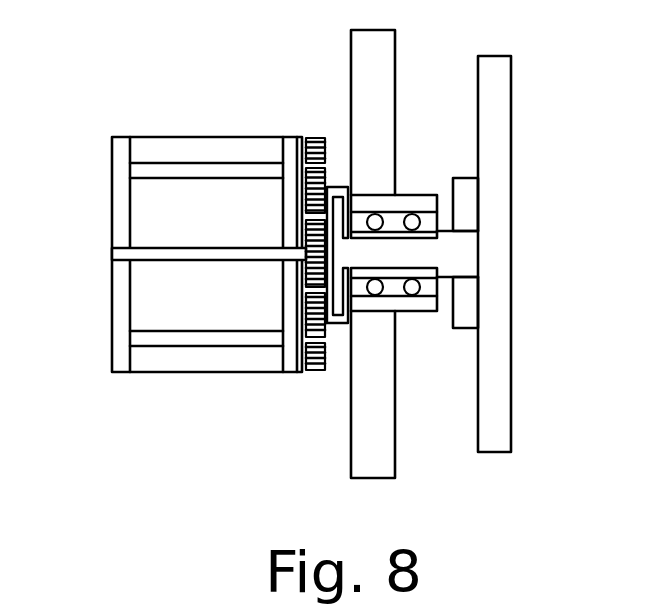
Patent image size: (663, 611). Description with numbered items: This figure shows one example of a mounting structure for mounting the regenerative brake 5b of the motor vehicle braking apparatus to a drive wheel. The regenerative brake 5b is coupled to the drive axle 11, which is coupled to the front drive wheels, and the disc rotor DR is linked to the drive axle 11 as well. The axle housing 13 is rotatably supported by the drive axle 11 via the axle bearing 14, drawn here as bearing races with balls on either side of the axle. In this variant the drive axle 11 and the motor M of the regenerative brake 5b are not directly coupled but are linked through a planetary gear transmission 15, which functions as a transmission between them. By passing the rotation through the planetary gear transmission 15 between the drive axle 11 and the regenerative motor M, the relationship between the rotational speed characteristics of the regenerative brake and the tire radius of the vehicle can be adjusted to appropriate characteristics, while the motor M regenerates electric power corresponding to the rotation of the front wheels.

The regenerative brake 5b is at (157, 136).
The drive axle 11 is at (115, 263).
The planetary gear transmission 15 is at (313, 136).
The axle housing 13 is at (350, 78).
The axle bearing 14 is at (410, 303).
The motor M is at (272, 367).
The disc rotor DR is at (502, 388).